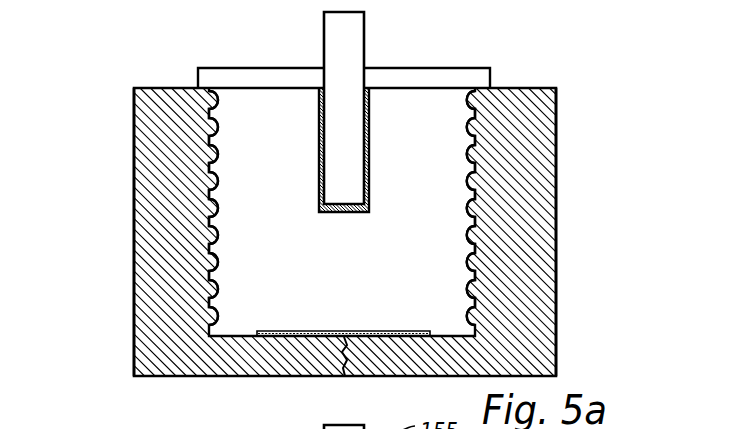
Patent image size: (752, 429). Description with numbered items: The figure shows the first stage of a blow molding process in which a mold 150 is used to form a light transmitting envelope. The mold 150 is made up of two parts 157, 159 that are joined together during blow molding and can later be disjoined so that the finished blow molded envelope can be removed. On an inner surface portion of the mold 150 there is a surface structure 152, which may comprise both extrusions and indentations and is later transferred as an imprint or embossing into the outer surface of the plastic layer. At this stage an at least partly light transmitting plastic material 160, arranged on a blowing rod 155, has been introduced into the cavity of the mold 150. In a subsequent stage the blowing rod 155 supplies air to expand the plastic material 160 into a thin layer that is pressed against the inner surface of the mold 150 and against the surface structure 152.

The mold 150 is at (584, 108).
The surface structure 152 is at (393, 330).
The blowing rod 155 is at (364, 42).
The first mold part 157 is at (134, 252).
The second mold part 159 is at (556, 203).
The light transmitting plastic material 160 is at (320, 155).